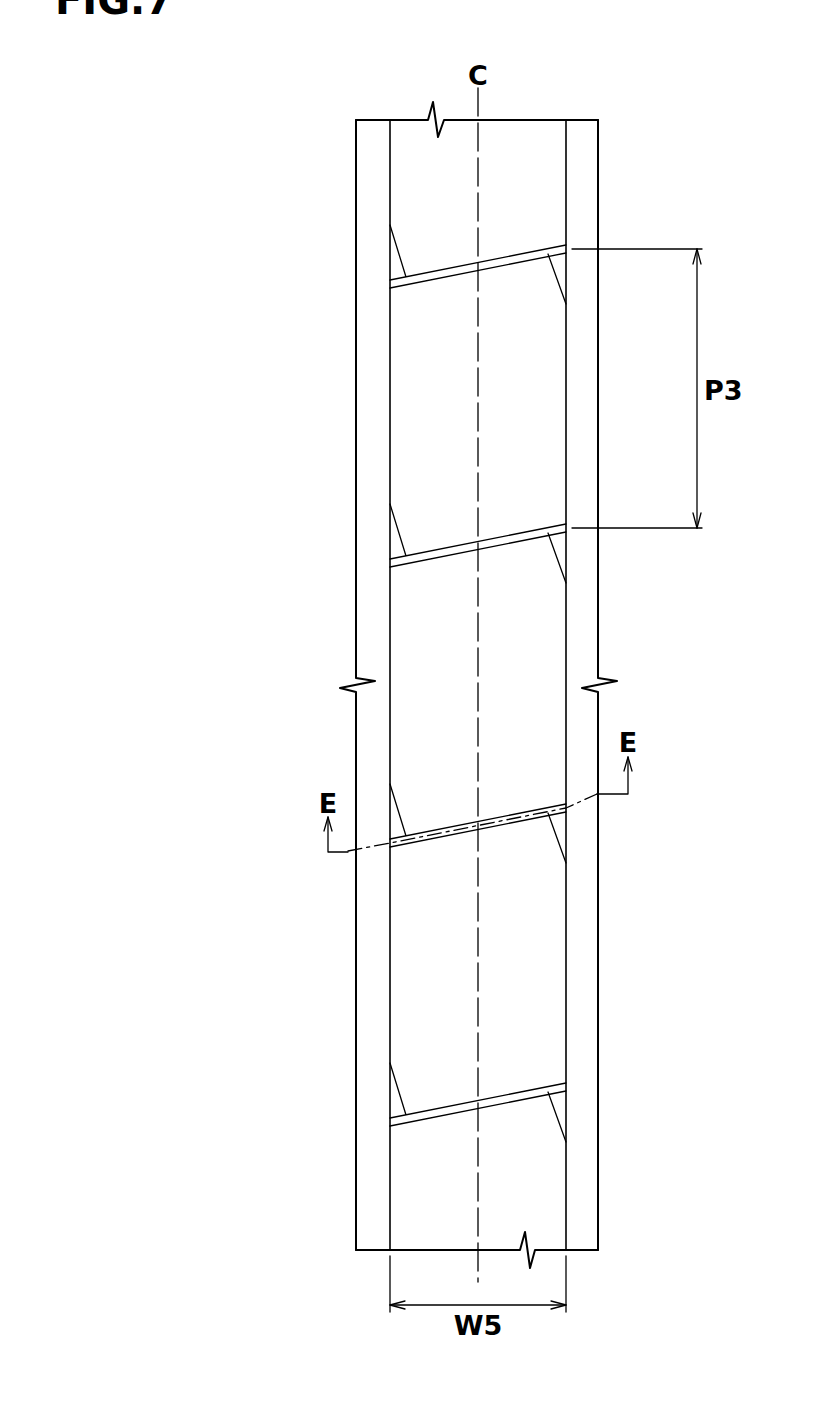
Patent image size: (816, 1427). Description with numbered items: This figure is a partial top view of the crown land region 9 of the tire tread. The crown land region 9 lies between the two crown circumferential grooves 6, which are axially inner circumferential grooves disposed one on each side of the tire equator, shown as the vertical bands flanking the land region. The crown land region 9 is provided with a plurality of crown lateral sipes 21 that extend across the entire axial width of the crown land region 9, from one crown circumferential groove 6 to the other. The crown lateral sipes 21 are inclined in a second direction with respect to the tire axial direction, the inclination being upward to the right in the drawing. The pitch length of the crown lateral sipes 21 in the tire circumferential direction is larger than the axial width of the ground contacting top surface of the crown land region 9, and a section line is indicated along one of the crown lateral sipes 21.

The crown circumferential groove 6 is at (373, 155).
The crown land region 9 is at (523, 157).
The crown lateral sipe 21 is at (520, 258).